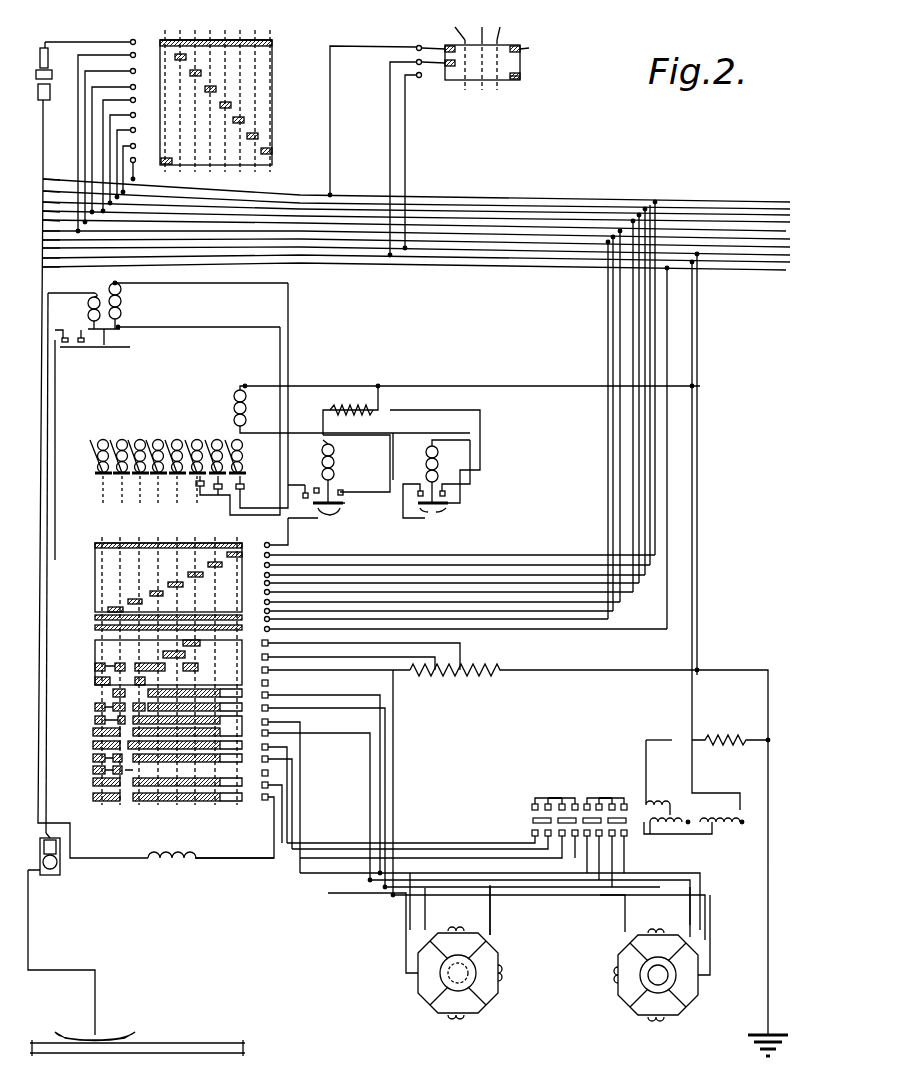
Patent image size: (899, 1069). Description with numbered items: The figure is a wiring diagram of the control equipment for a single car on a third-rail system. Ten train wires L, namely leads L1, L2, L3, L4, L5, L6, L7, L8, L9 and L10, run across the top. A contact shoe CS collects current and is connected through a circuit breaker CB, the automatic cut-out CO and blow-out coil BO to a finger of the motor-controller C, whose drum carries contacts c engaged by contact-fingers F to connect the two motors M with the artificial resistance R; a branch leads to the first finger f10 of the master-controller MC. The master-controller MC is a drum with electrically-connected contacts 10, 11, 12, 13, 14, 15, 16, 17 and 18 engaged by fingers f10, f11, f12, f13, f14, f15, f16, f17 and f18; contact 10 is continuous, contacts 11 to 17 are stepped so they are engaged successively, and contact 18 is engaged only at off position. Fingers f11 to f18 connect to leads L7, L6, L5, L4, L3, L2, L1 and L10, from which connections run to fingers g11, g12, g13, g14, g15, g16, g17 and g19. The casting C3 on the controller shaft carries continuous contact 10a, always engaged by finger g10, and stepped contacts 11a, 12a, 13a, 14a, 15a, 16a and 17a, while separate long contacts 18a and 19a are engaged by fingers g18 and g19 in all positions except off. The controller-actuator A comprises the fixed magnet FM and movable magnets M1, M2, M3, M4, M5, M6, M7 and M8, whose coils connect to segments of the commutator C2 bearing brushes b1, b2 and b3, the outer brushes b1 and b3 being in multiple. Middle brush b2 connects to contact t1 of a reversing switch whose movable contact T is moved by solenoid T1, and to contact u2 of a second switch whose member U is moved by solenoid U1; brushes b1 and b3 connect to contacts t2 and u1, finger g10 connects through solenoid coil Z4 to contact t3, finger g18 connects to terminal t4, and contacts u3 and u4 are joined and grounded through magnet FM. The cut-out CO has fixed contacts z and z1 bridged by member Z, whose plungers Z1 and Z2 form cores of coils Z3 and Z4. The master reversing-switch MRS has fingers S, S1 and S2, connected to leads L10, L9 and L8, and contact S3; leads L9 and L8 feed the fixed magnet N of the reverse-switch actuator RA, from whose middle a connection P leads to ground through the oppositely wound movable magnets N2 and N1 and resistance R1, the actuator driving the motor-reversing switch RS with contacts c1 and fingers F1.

The train wires L is at (419, 224).
The train wire L1 is at (34, 181).
The train wire L2 is at (32, 192).
The train wire L3 is at (32, 203).
The train wire L4 is at (32, 213).
The train wire L5 is at (32, 223).
The train wire L6 is at (32, 233).
The train wire L7 is at (32, 242).
The train wire L8 is at (32, 251).
The train wire L9 is at (32, 260).
The train wire L10 is at (34, 275).
The contact-finger f10 is at (90, 42).
The contact-finger f11 is at (105, 141).
The contact-finger f12 is at (109, 144).
The contact-finger f13 is at (112, 146).
The contact-finger f14 is at (118, 153).
The contact-finger f15 is at (121, 156).
The contact-finger f16 is at (124, 161).
The contact-finger f17 is at (124, 166).
The contact-finger f18 is at (131, 167).
The master-controller MC is at (273, 98).
The continuous contact 10 is at (272, 44).
The short contact 11 is at (186, 57).
The short contact 12 is at (201, 73).
The short contact 13 is at (216, 89).
The short contact 14 is at (231, 105).
The short contact 15 is at (244, 120).
The short contact 16 is at (258, 136).
The short contact 17 is at (272, 151).
The off-position contact 18 is at (172, 161).
The contact-finger S is at (412, 47).
The contact-finger S1 is at (386, 62).
The contact-finger S2 is at (419, 78).
The reversing-switch contact S3 is at (520, 76).
The master reversing-switch MRS is at (476, 92).
The movable bridging member Z is at (130, 347).
The plunger Z1 is at (88, 304).
The plunger Z2 is at (121, 312).
The solenoid-coil Z3 is at (97, 292).
The solenoid-coil Z4 is at (121, 289).
The fixed contact z is at (66, 336).
The fixed contact z1 is at (82, 336).
The automatic cut-out switch CO is at (76, 450).
The fixed magnet FM is at (238, 386).
The movable magnet M1 is at (243, 449).
The movable magnet M2 is at (217, 438).
The movable magnet M3 is at (197, 438).
The movable magnet M4 is at (177, 438).
The movable magnet M5 is at (158, 438).
The movable magnet M6 is at (140, 438).
The movable magnet M7 is at (121, 438).
The movable magnet M8 is at (101, 438).
The controller-actuator A is at (92, 447).
The commutator C2 is at (95, 478).
The brush b1 is at (243, 490).
The brush b2 is at (213, 498).
The brush b3 is at (200, 490).
The movable contact T is at (342, 505).
The solenoid T1 is at (335, 447).
The fixed contact t1 is at (304, 494).
The fixed contact t2 is at (315, 488).
The fixed contact t3 is at (341, 515).
The terminal t4 is at (341, 490).
The movable member U is at (435, 474).
The solenoid U1 is at (439, 452).
The fixed contact u1 is at (420, 512).
The fixed contact u2 is at (418, 491).
The fixed contact u3 is at (442, 512).
The fixed contact u4 is at (443, 491).
The casting C3 is at (160, 594).
The continuous contact 10a is at (118, 548).
The short contact 11a is at (226, 556).
The short contact 12a is at (207, 565).
The short contact 13a is at (187, 575).
The short contact 14a is at (167, 585).
The short contact 15a is at (149, 594).
The short contact 16a is at (143, 602).
The short contact 17a is at (124, 610).
The long contact 18a is at (94, 618).
The long contact 19a is at (92, 625).
The contact-finger g10 is at (272, 546).
The contact-finger g11 is at (448, 555).
The contact-finger g12 is at (445, 565).
The contact-finger g13 is at (443, 575).
The contact-finger g14 is at (440, 583).
The contact-finger g15 is at (437, 592).
The contact-finger g16 is at (430, 602).
The contact-finger g17 is at (427, 611).
The contact-finger g18 is at (424, 619).
The contact-finger g19 is at (454, 629).
The motor-controller C is at (148, 808).
The contacts c is at (93, 785).
The contact-fingers F is at (270, 683).
The artificial resistance R is at (589, 763).
The resistance R1 is at (731, 706).
The reverse-switch actuator RA is at (716, 775).
The fixed magnet N is at (697, 811).
The movable magnet N1 is at (672, 828).
The movable magnet N2 is at (659, 777).
The connection P is at (712, 832).
The motor-reversing switch RS is at (460, 829).
The contacts c1 is at (630, 808).
The contact-fingers F1 is at (632, 838).
The motors M is at (519, 969).
The blow-out coil BO is at (211, 843).
The circuit-breaker CB is at (50, 878).
The contact shoe CS is at (128, 1035).